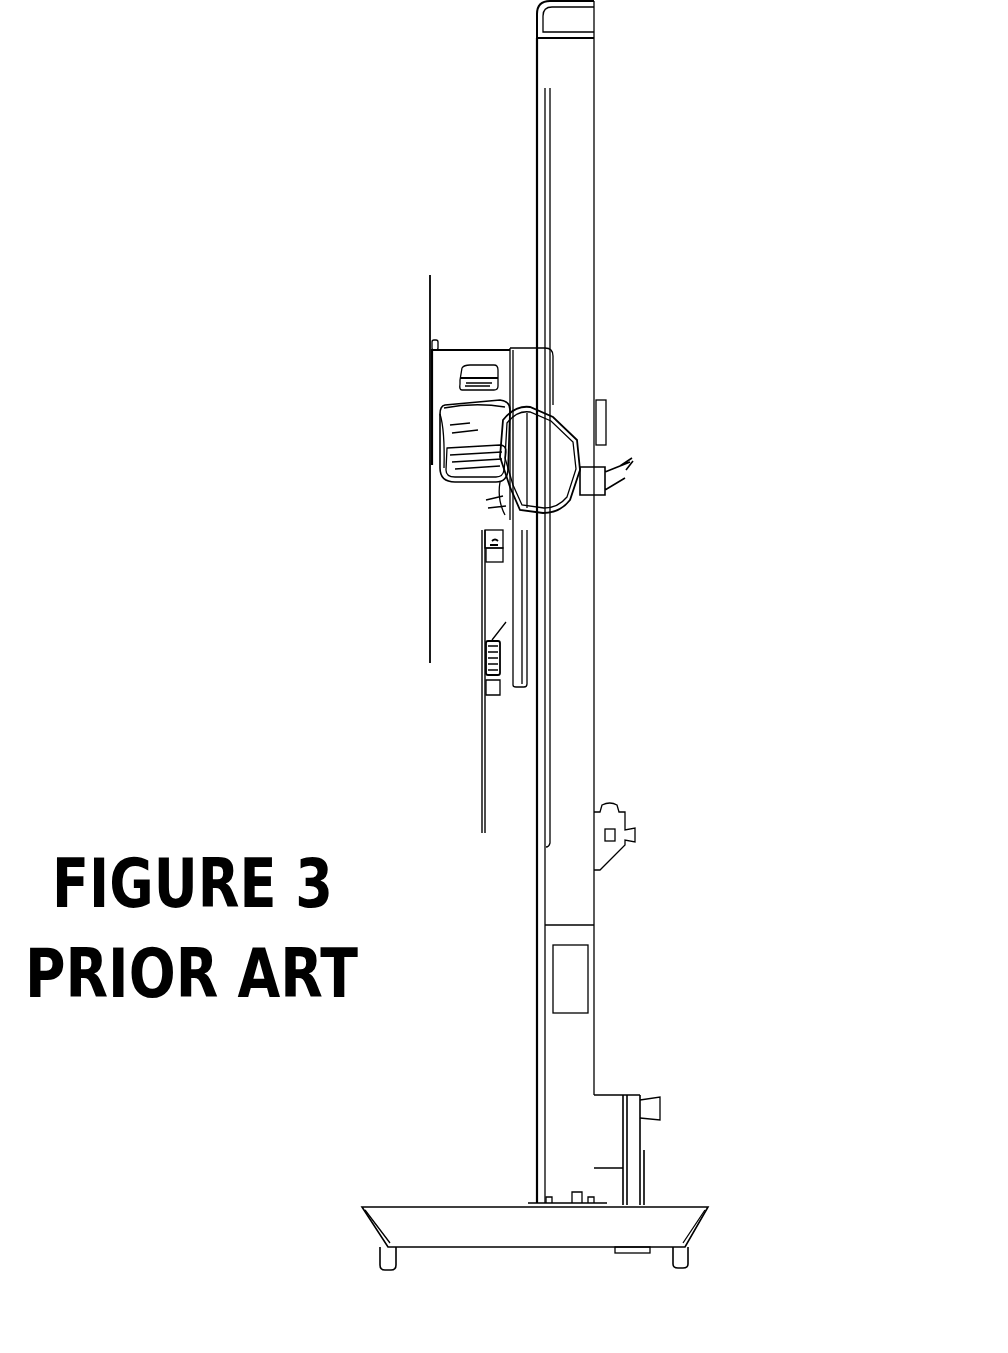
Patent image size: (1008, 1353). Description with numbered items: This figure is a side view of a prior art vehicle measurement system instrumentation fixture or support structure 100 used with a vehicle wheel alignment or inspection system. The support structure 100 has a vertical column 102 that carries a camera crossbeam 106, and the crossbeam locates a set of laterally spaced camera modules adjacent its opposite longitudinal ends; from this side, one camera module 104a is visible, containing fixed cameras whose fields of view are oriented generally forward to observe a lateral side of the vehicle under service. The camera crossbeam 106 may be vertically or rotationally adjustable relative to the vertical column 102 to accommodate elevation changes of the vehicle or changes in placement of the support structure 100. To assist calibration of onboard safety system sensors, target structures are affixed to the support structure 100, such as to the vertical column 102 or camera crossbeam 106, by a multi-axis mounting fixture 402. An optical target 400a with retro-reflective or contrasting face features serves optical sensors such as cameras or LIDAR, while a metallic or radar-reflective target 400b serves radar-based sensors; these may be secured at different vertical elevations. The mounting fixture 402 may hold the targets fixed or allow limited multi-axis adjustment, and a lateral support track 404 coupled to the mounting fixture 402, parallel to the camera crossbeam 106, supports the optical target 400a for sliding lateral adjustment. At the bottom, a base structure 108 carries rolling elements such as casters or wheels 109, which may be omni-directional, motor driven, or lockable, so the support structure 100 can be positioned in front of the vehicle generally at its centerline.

The support structure 100 is at (660, 215).
The vertical column 102 is at (527, 187).
The camera module 104a is at (567, 454).
The camera crossbeam 106 is at (458, 427).
The base structure 108 is at (448, 1188).
The wheels 109 is at (366, 1257).
The optical target 400a is at (466, 751).
The radar-reflective target 400b is at (420, 522).
The multi-axis mounting fixture 402 is at (485, 360).
The lateral support track 404 is at (512, 656).